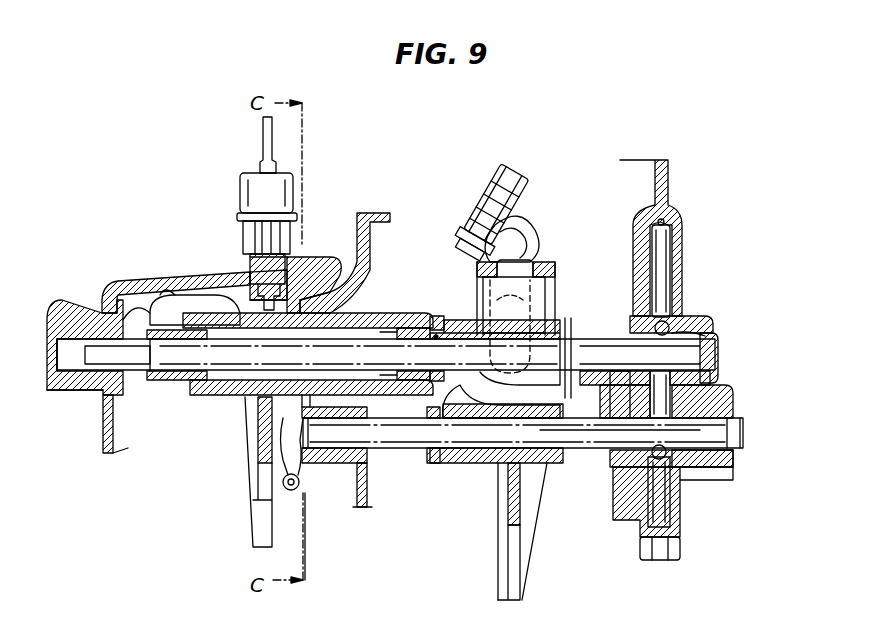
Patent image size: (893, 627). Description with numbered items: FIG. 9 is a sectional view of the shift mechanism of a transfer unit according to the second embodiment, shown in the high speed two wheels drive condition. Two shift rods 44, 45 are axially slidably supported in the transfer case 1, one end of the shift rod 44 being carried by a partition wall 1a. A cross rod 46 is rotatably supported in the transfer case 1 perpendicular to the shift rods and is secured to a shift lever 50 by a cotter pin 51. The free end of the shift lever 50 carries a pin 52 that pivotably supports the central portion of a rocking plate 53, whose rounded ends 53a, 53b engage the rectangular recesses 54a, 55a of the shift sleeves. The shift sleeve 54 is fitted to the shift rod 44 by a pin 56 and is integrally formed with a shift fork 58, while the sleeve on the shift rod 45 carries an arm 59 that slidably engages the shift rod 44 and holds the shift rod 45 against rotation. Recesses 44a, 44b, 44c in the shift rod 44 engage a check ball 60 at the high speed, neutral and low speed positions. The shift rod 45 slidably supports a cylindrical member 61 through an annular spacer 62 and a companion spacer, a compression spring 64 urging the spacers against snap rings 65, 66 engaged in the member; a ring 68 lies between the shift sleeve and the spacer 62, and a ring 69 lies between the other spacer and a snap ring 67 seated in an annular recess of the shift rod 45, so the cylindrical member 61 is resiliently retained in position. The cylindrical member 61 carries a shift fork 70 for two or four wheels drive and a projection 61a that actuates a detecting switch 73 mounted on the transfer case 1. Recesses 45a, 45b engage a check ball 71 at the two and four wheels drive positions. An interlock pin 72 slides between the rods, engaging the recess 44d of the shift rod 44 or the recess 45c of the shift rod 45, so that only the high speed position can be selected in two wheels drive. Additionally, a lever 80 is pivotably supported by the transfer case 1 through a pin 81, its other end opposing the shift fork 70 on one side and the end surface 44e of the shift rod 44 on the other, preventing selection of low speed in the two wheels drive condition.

The transfer case 1 is at (363, 214).
The partition wall 1a is at (370, 478).
The shift rod 44 is at (410, 450).
The recess 44a is at (733, 403).
The recess 44b is at (697, 467).
The recess 44c is at (732, 460).
The recess 44d is at (620, 438).
The end surface 44e is at (332, 470).
The shift rod 45 is at (143, 373).
The recess 45a is at (640, 356).
The recess 45b is at (718, 334).
The recess 45c is at (718, 353).
The cross rod 46 is at (515, 216).
The shift lever 50 is at (540, 262).
The cotter pin 51 is at (472, 200).
The pin 52 is at (486, 305).
The rocking plate 53 is at (532, 296).
The end of rocking plate 53a is at (555, 394).
The end of rocking plate 53b is at (546, 270).
The shift sleeve 54 is at (566, 465).
The rectangular recess 54a is at (524, 402).
The rectangular recess 55a is at (557, 272).
The pin 56 is at (465, 465).
The shift fork 58 is at (505, 570).
The arm 59 is at (620, 470).
The check ball 60 is at (672, 470).
The cylindrical member 61 is at (247, 397).
The projection 61a is at (315, 262).
The annular spacer 62 is at (400, 320).
The compression spring 64 is at (228, 295).
The snap ring 65 is at (432, 318).
The snap ring 66 is at (175, 281).
The snap ring 67 is at (120, 298).
The ring 68 is at (443, 326).
The ring 69 is at (176, 381).
The shift fork 70 is at (250, 510).
The check ball 71 is at (690, 318).
The interlock pin 72 is at (672, 394).
The switch 73 is at (240, 198).
The lever 80 is at (298, 487).
The pin 81 is at (305, 500).